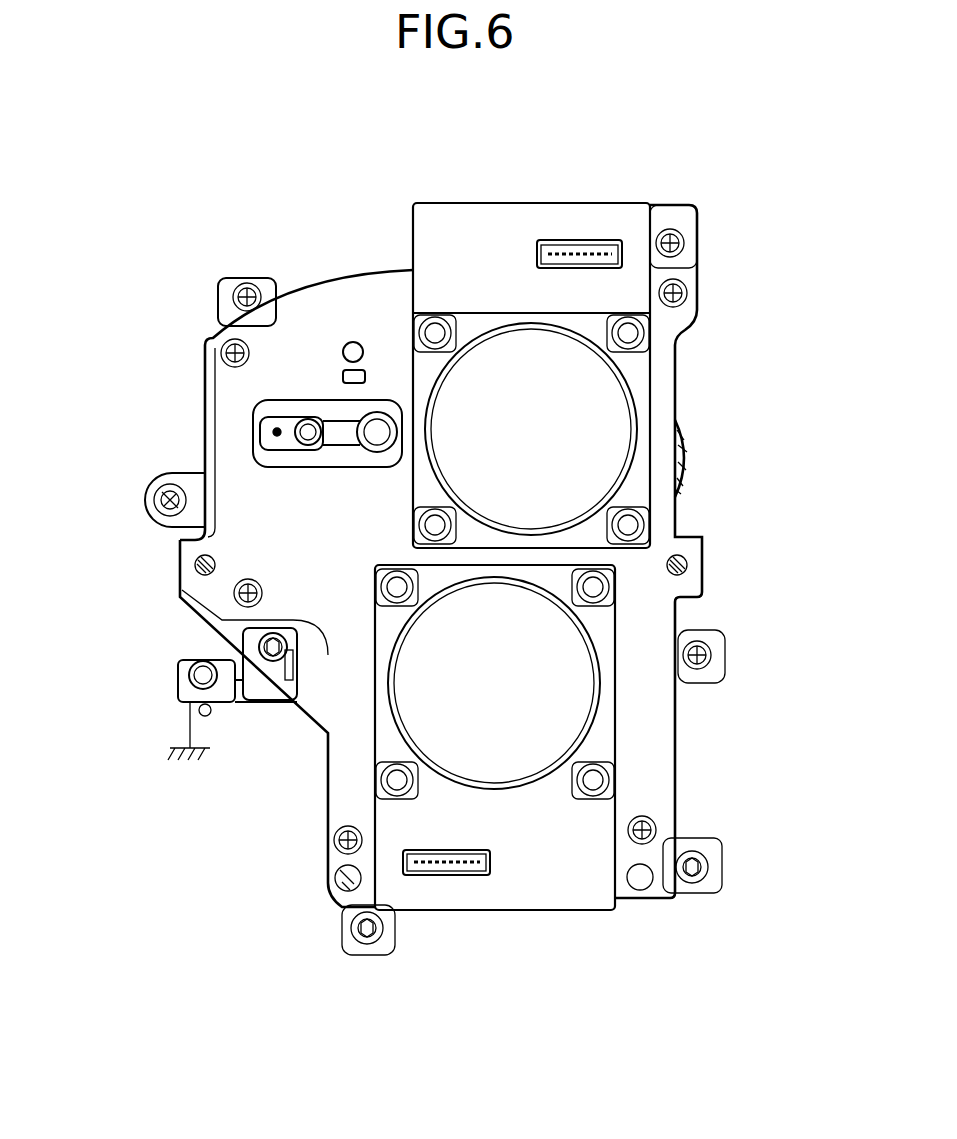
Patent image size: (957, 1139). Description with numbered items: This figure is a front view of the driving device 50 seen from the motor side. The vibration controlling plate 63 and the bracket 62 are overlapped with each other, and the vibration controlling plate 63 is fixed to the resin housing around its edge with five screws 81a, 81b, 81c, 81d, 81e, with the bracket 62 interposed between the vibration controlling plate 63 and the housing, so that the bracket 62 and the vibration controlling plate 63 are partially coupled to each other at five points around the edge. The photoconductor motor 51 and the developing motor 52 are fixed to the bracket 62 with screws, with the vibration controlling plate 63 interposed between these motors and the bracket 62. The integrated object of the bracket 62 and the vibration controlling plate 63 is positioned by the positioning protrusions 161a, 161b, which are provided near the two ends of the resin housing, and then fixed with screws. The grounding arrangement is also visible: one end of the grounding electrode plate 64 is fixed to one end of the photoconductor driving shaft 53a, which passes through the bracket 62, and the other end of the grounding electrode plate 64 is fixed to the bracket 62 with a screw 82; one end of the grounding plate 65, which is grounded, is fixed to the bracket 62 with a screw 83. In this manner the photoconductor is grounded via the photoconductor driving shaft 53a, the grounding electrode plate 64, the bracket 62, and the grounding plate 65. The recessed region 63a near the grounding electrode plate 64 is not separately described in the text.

The driving device 50 is at (700, 454).
The photoconductor motor 51 is at (545, 212).
The developing motor 52 is at (541, 898).
The photoconductor driving shaft 53a is at (390, 408).
The bracket 62 is at (205, 393).
The vibration controlling plate 63 is at (335, 800).
The recess portion 63a is at (358, 458).
The grounding electrode plate 64 is at (342, 428).
The grounding plate 65 is at (261, 693).
The screw 81a is at (217, 337).
The screw 81b is at (180, 597).
The screw 81c is at (327, 860).
The screw 81d is at (665, 826).
The screw 81e is at (690, 293).
The screw 82 is at (306, 421).
The screw 83 is at (283, 640).
The positioning protrusion 161a is at (198, 558).
The positioning protrusion 161b is at (705, 552).